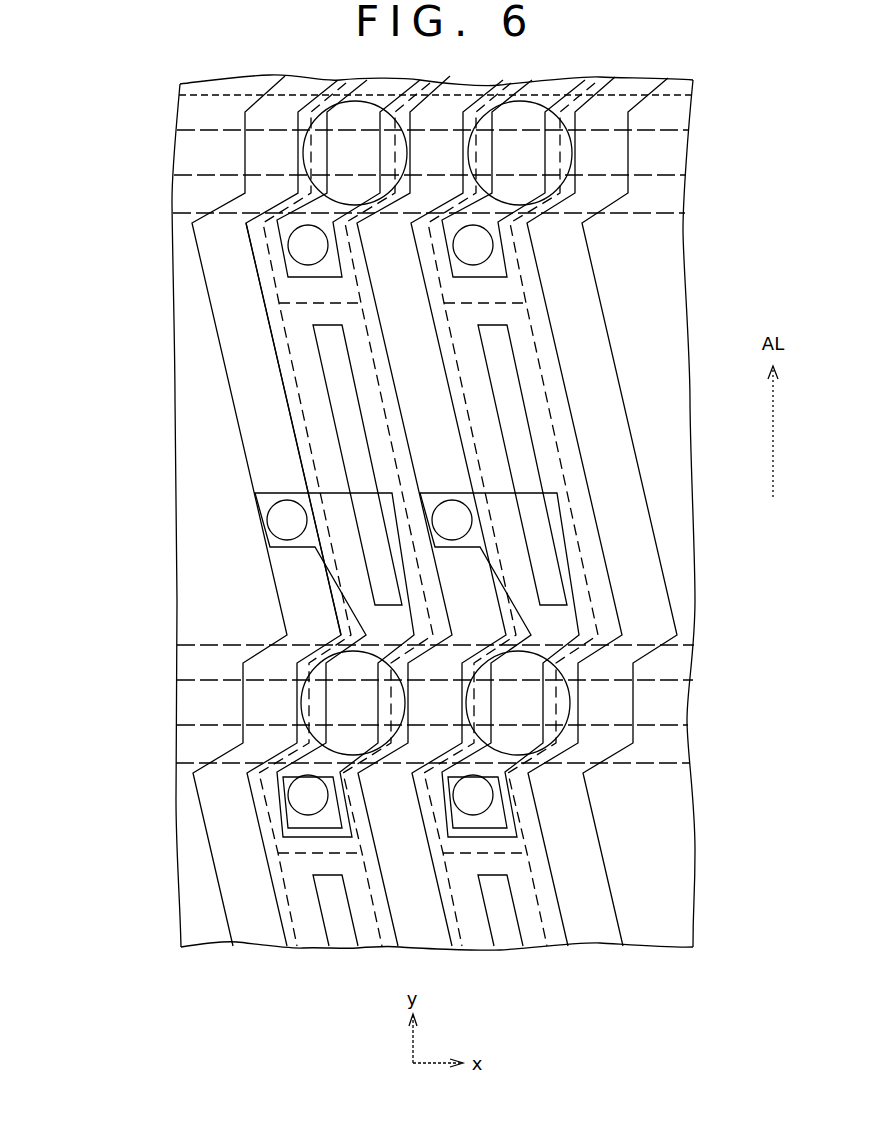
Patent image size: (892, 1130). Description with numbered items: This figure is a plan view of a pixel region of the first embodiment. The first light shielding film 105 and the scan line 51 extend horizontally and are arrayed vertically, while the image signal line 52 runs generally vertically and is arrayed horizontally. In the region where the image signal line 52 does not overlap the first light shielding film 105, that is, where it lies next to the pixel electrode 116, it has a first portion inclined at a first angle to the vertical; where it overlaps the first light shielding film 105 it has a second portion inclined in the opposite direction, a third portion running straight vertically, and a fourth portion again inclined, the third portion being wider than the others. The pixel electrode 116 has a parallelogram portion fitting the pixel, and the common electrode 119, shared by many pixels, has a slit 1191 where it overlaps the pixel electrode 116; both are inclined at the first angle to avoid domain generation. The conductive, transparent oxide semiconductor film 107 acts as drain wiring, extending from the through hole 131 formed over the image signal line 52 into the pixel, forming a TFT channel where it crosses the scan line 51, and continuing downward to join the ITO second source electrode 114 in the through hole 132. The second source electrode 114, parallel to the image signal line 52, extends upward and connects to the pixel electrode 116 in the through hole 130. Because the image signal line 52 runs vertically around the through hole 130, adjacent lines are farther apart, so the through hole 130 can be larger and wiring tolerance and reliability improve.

The scan line 51 is at (215, 679).
The image signal line 52 is at (217, 248).
The first light shielding film 105 is at (215, 644).
The oxide semiconductor film 107 is at (383, 622).
The second source electrode 114 is at (282, 818).
The pixel electrode 116 is at (317, 407).
The common electrode 119 is at (280, 284).
The slit 1191 is at (328, 353).
The through hole 130 is at (300, 715).
The through hole 131 is at (268, 500).
The through hole 132 is at (284, 796).